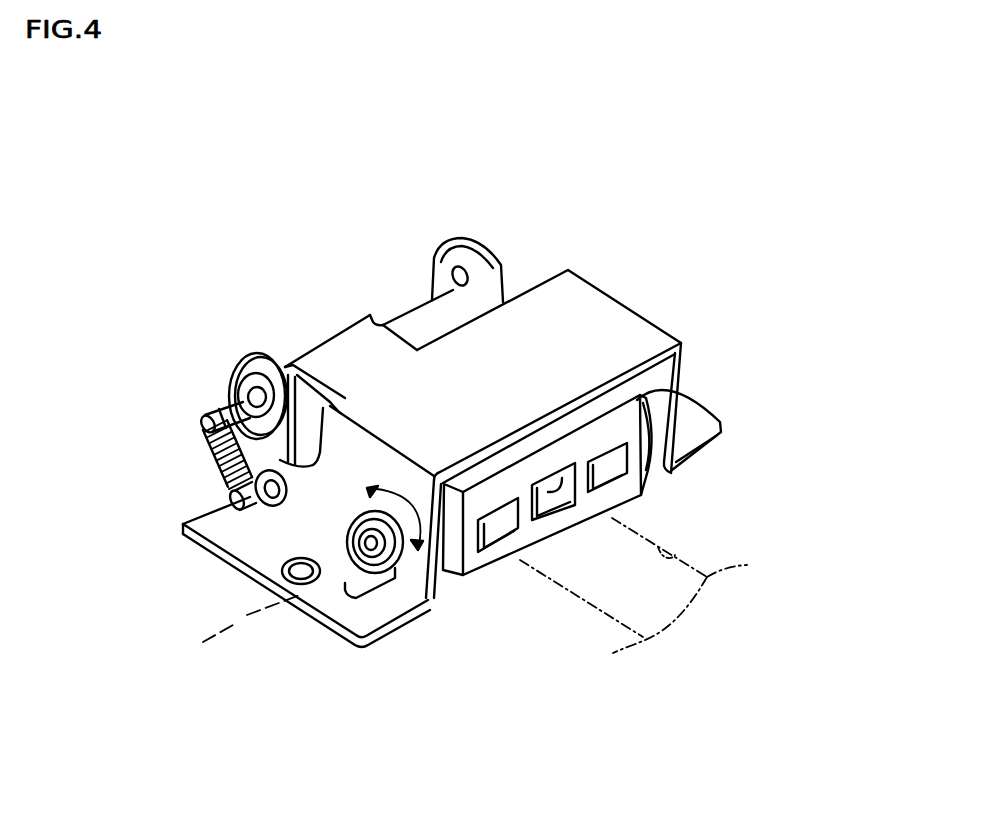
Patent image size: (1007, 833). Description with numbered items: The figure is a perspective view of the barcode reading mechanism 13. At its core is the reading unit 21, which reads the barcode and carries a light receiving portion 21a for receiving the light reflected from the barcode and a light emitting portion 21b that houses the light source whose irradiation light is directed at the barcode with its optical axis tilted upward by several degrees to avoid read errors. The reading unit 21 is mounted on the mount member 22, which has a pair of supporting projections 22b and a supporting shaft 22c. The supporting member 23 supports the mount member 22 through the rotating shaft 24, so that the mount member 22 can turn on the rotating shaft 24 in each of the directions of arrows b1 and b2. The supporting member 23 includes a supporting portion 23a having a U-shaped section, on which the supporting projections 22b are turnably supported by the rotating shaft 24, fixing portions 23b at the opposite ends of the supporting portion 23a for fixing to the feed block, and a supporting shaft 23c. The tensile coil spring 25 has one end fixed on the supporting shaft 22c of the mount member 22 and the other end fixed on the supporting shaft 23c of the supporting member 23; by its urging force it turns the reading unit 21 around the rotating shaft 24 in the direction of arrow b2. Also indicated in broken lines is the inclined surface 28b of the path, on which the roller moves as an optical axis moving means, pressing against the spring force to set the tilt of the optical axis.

The barcode reading mechanism 13 is at (686, 771).
The reading unit 21 is at (629, 532).
The light receiving portion 21a is at (555, 490).
The light emitting portion 21b is at (615, 467).
The mount member 22 is at (522, 560).
The supporting projections 22b is at (640, 455).
The supporting shaft 22c is at (230, 405).
The supporting member 23 is at (538, 385).
The supporting portion 23a is at (643, 333).
The fixing portions 23b is at (700, 419).
The supporting shaft 23c is at (254, 502).
The rotating shaft 24 is at (356, 560).
The tensile coil spring 25 is at (210, 466).
The inclined surface 28b is at (667, 543).